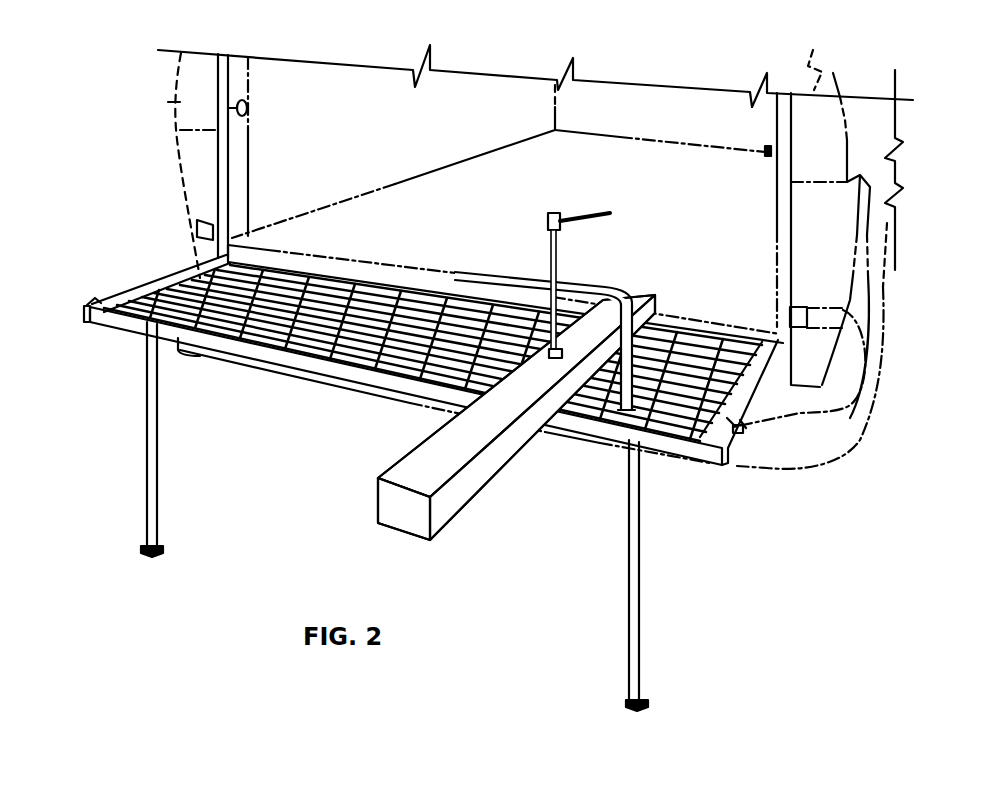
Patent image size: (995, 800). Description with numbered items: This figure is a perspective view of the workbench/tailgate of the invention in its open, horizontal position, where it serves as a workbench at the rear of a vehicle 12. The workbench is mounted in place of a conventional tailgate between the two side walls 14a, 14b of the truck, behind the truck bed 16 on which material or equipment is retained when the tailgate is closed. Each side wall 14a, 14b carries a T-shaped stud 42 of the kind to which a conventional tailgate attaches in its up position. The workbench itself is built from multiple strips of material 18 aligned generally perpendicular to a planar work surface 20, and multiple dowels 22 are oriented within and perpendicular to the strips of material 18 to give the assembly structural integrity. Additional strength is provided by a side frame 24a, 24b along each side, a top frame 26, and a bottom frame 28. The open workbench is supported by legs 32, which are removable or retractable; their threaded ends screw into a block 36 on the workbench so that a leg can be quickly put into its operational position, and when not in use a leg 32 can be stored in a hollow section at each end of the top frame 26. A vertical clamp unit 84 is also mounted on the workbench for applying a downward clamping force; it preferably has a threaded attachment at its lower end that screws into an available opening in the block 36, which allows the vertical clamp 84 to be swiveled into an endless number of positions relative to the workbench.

The vehicle 12 is at (832, 47).
The side wall 14a is at (177, 102).
The side wall 14b is at (832, 144).
The truck bed 16 is at (472, 188).
The strips of material 18 is at (197, 275).
The planar work surface 20 is at (140, 303).
The dowels 22 is at (137, 330).
The side frame 24a is at (156, 287).
The side frame 24b is at (718, 437).
The top frame 26 is at (288, 362).
The bottom frame 28 is at (273, 268).
The legs 32 is at (153, 490).
The block 36 is at (608, 426).
The T-shaped stud 42 is at (248, 108).
The vertical clamp unit 84 is at (580, 284).